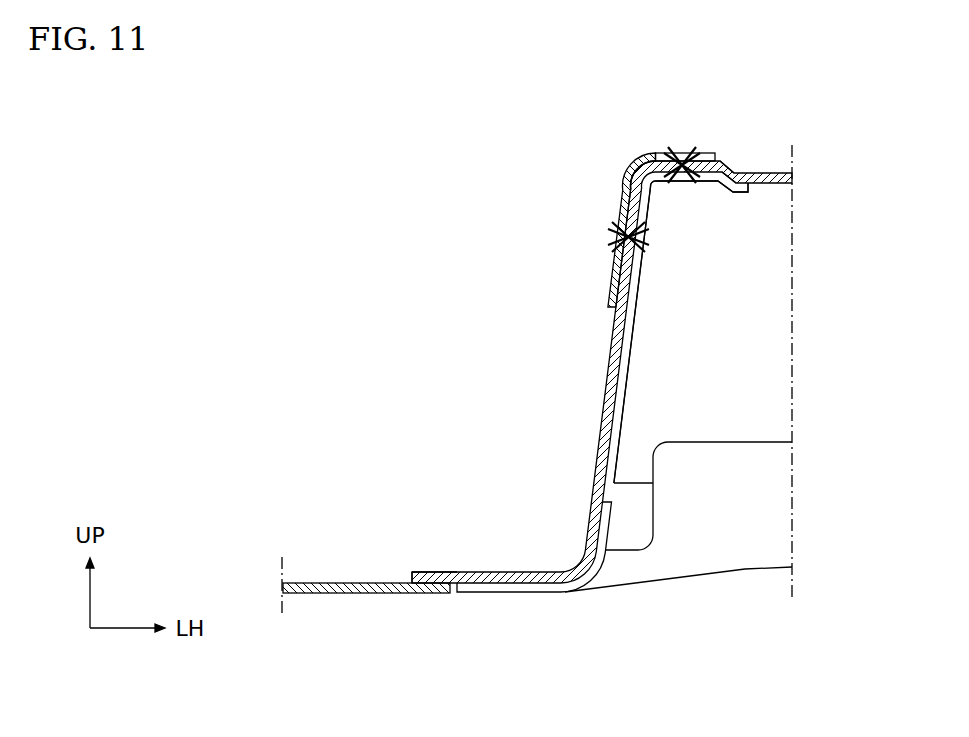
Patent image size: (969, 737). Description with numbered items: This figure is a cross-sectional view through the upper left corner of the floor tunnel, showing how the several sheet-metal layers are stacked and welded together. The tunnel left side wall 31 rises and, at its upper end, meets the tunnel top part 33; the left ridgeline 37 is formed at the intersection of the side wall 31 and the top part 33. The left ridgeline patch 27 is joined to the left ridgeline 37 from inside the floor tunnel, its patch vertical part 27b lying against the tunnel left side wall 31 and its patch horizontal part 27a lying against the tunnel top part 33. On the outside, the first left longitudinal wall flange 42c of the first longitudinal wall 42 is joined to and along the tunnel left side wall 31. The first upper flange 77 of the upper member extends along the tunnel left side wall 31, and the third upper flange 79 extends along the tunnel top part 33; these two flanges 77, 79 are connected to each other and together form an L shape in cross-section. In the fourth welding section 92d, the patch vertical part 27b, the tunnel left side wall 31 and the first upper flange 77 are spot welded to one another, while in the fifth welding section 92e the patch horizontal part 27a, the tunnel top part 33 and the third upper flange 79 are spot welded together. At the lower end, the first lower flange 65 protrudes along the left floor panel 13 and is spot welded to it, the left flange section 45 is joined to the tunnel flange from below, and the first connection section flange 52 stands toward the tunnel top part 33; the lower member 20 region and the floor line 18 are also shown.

The left floor panel 13 is at (345, 583).
The floor 18 is at (750, 578).
The bracket member 20 is at (538, 352).
The left ridgeline patch 27 is at (700, 332).
The patch horizontal part 27a is at (700, 182).
The patch vertical part 27b is at (646, 217).
The tunnel left side wall 31 is at (606, 382).
The tunnel top part 33 is at (727, 163).
The left ridgeline 37 is at (638, 161).
The first longitudinal wall 42 is at (780, 348).
The first left longitudinal wall flange 42c is at (700, 332).
The left flange section 45 is at (527, 592).
The first connection section flange 52 is at (752, 512).
The first lower flange 65 is at (456, 574).
The first upper flange 77 is at (617, 220).
The third upper flange 79 is at (657, 152).
The fourth welding section 92d is at (612, 240).
The fifth welding section 92e is at (683, 160).